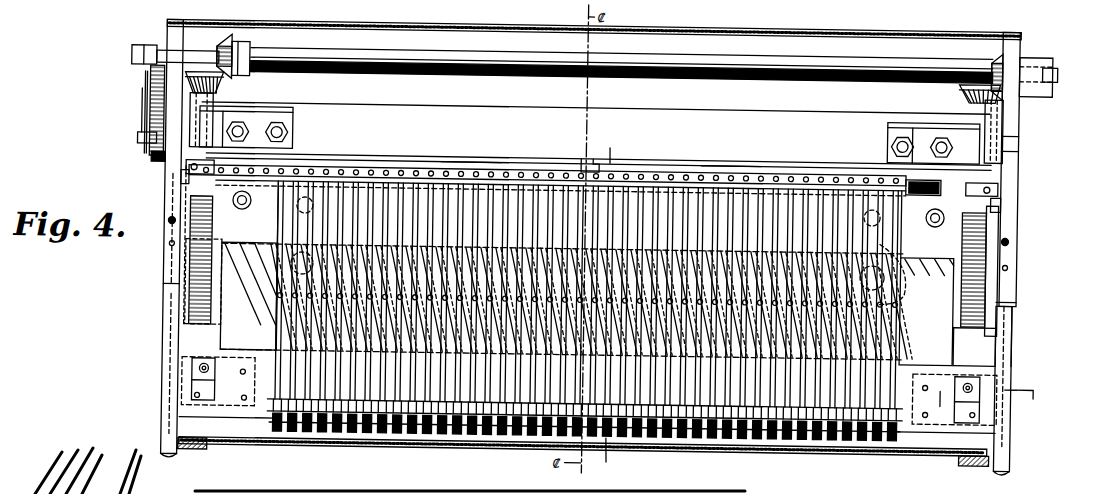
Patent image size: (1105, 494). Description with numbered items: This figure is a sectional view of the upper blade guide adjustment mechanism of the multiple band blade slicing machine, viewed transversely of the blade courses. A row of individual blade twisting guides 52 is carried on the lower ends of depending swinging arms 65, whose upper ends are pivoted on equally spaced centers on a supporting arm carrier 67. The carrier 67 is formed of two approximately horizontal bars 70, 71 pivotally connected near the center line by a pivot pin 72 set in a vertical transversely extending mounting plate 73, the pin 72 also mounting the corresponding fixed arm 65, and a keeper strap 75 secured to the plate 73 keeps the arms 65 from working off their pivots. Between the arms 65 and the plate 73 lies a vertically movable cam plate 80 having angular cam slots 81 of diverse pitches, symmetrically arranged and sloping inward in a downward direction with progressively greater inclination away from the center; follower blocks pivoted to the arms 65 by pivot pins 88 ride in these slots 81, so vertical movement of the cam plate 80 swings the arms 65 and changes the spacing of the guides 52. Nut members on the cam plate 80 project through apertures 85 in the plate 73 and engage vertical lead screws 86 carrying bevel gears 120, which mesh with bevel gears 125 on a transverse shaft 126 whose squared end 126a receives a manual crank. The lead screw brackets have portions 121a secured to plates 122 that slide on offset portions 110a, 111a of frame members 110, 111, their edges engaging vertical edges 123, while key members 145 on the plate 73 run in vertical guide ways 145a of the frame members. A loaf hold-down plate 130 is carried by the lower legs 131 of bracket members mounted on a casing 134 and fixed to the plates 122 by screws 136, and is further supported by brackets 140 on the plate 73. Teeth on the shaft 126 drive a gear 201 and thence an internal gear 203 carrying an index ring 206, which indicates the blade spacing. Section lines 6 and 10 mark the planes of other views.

The section line 6- 6 is at (986, 400).
The section line 10- 10 is at (610, 462).
The blade twisting guide 52 is at (323, 441).
The swinging arm 65 is at (292, 385).
The supporting arm carrier 67 is at (757, 159).
The horizontal bar 70 is at (469, 172).
The horizontal bar 71 is at (726, 168).
The pivot pin 72 is at (584, 164).
The mounting plate 73 is at (810, 121).
The keeper strap 75 is at (515, 171).
The cam plate 80 is at (926, 312).
The cam slot 81 is at (896, 285).
The aperture 85 is at (989, 216).
The lead screw 86 is at (188, 211).
The pivot pin 88 is at (283, 300).
The frame member 110 is at (168, 427).
The offset portion 110a is at (166, 310).
The frame member 111 is at (1012, 449).
The offset portion 111a is at (1009, 306).
The bevel gear 120 is at (220, 90).
The bracket portion 121a is at (162, 164).
The plate 122 is at (162, 183).
The vertical edge 123 is at (166, 324).
The bevel gear 125 is at (245, 53).
The transverse shaft 126 is at (380, 53).
The squared shaft end 126a is at (130, 62).
The loaf hold-down plate 130 is at (412, 446).
The lower leg 131 is at (181, 449).
The casing 134 is at (524, 20).
The screw 136 is at (170, 250).
The bracket 140 is at (291, 132).
The key member 145 is at (185, 392).
The vertical guide way 145a is at (193, 411).
The gear 201 is at (150, 95).
The internal gear 203 is at (148, 110).
The index ring 206 is at (140, 124).